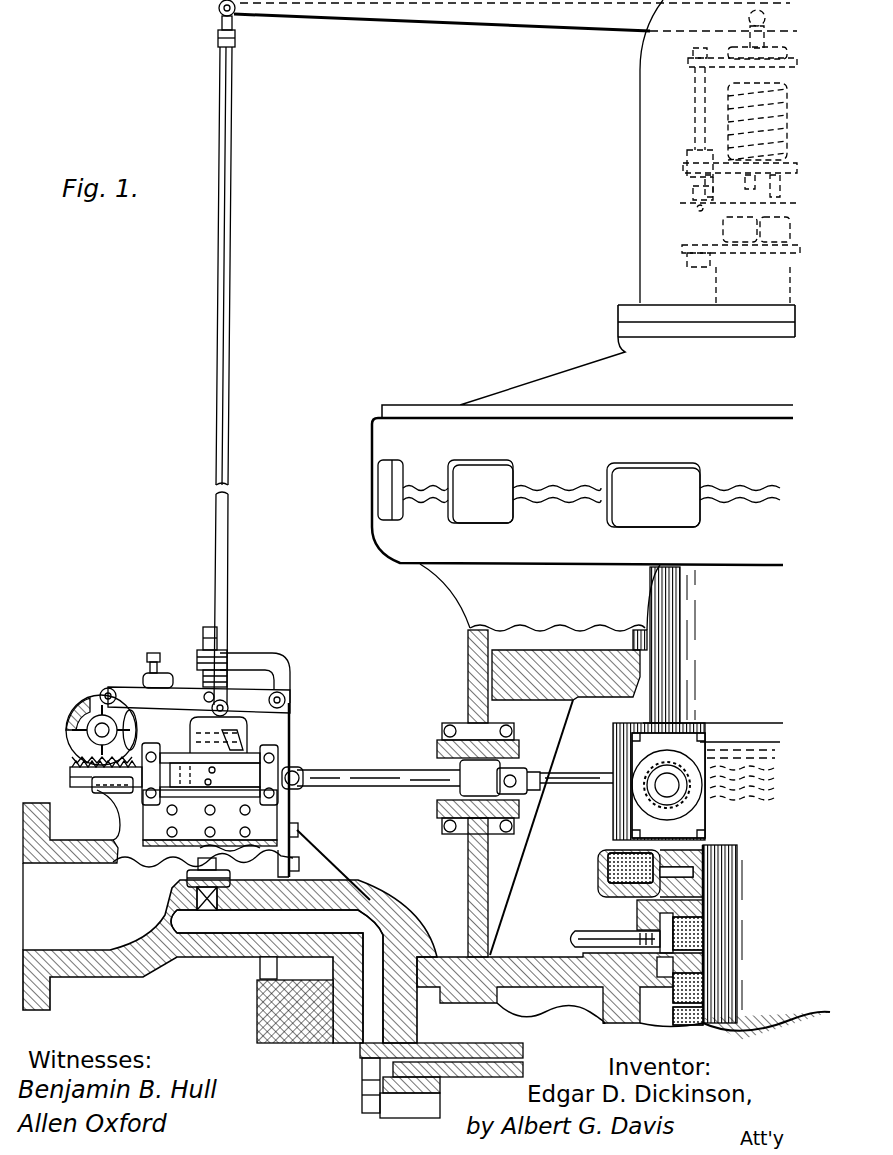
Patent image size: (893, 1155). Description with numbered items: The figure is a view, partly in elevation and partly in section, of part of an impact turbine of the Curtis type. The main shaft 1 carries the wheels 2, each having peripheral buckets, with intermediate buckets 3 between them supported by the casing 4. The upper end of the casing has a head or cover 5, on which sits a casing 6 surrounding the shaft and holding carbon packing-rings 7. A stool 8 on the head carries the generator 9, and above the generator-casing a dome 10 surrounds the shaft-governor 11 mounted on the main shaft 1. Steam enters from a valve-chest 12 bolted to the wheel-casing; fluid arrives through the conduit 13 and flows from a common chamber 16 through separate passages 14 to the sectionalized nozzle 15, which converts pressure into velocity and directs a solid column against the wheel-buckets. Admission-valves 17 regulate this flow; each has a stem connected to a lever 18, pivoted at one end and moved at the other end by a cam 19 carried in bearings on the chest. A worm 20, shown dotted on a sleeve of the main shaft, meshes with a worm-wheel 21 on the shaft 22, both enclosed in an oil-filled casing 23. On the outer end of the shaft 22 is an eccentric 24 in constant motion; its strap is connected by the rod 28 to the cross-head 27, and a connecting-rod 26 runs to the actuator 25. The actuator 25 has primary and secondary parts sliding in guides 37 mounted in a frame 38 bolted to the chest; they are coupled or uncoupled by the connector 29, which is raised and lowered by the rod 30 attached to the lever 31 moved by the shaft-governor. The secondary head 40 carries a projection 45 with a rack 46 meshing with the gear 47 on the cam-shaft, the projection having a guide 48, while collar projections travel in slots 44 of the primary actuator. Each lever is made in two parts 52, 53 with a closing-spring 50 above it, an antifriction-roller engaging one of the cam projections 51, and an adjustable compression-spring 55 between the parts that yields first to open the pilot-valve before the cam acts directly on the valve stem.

The main shaft 1 is at (731, 803).
The wheels 2 is at (400, 1118).
The intermediate buckets 3 is at (367, 1113).
The casing 4 is at (307, 1090).
The head or cover 5 is at (518, 971).
The casing 6 is at (633, 910).
The carbon packing-rings 7 is at (673, 930).
The stool 8 is at (463, 874).
The generator 9 is at (582, 483).
The dome 10 is at (642, 273).
The shaft-governor 11 is at (697, 203).
The valve-chest 12 is at (300, 872).
The conduit 13 is at (230, 916).
The passages 14 is at (277, 976).
The nozzle 15 is at (297, 1052).
The common chamber 16 is at (285, 855).
The admission-valves 17 is at (185, 868).
The lever 18 is at (291, 670).
The cam 19 is at (97, 710).
The worm 20 is at (700, 797).
The worm-wheel 21 is at (703, 828).
The shaft 22 is at (670, 773).
The casing 23 is at (598, 870).
The eccentric 24 is at (700, 760).
The actuator 25 is at (192, 737).
The connecting-rod 26 is at (380, 777).
The cross-head 27 is at (457, 795).
The rod 28 is at (573, 790).
The connector 29 is at (250, 727).
The rod 30 is at (217, 570).
The lever 31 is at (468, 21).
The guides 37 is at (278, 753).
The frame 38 is at (227, 821).
The head 40 is at (210, 818).
The slots 44 is at (297, 768).
The projection 45 is at (87, 783).
The rack 46 is at (72, 764).
The gear 47 is at (70, 752).
The guide 48 is at (103, 793).
The closing-spring 50 is at (205, 650).
The cam projections 51 is at (73, 720).
The lever part 52 is at (172, 690).
The lever part 53 is at (128, 690).
The compression-spring 55 is at (137, 680).